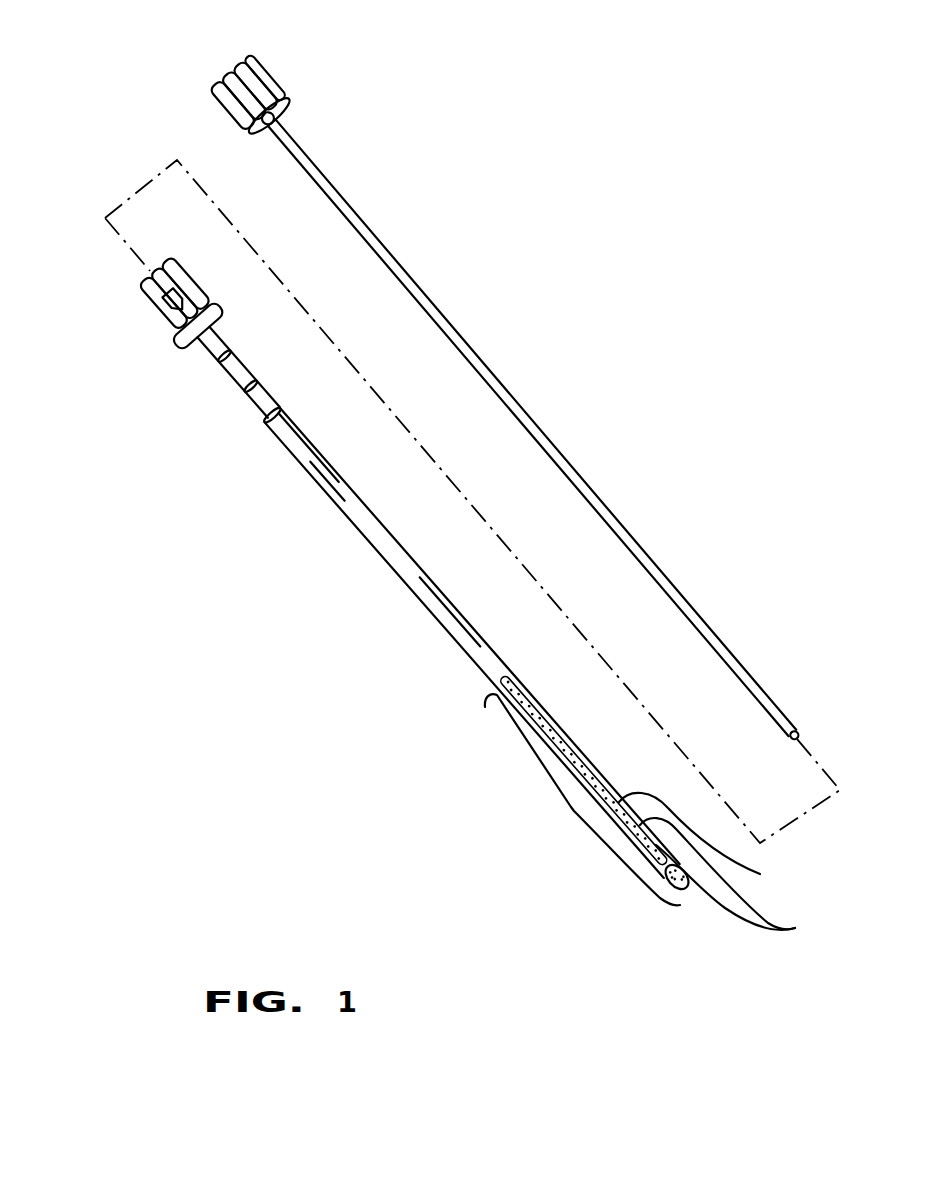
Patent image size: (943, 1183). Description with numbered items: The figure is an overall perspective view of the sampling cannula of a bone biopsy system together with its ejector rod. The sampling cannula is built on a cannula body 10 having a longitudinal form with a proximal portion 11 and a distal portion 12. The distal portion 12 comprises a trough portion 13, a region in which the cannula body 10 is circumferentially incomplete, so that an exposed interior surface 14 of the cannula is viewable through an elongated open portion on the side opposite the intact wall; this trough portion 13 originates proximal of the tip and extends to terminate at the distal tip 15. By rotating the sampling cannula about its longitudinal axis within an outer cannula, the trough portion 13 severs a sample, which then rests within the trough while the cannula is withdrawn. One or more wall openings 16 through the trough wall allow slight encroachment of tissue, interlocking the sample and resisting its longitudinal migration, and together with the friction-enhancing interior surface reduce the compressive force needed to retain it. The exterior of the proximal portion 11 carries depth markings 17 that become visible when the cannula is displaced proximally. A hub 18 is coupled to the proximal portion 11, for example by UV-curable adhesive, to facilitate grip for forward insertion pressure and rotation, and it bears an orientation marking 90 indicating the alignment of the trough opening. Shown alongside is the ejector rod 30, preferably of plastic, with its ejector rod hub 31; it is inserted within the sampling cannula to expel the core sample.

The cannula body 10 is at (302, 483).
The proximal portion 11 is at (210, 348).
The distal portion 12 is at (488, 677).
The trough portion 13 is at (570, 808).
The exposed interior surface 14 is at (708, 839).
The distal tip 15 is at (688, 894).
The wall opening 16 is at (798, 927).
The depth markings 17 is at (218, 364).
The hub 18 is at (146, 300).
The orientation marking 90 is at (174, 318).
The ejector rod 30 is at (323, 162).
The ejector rod hub 31 is at (270, 74).